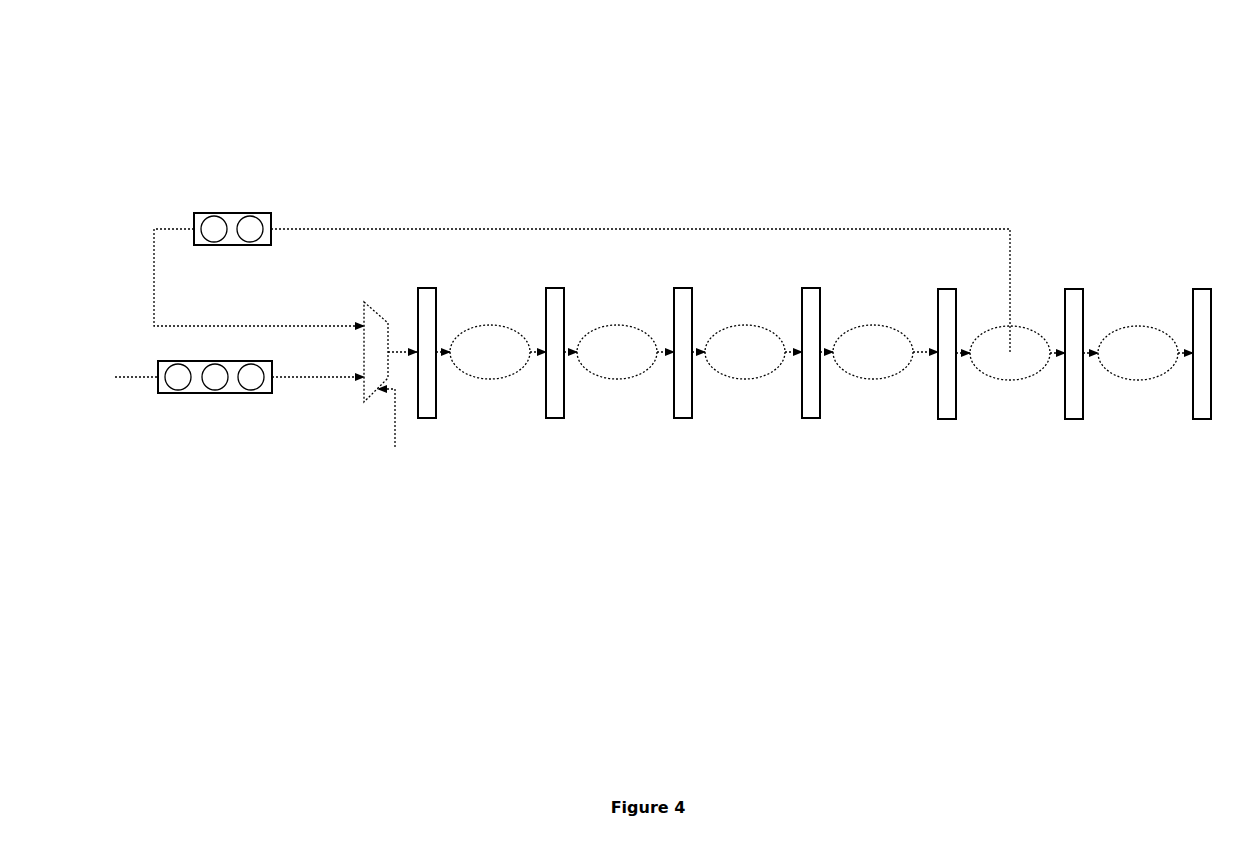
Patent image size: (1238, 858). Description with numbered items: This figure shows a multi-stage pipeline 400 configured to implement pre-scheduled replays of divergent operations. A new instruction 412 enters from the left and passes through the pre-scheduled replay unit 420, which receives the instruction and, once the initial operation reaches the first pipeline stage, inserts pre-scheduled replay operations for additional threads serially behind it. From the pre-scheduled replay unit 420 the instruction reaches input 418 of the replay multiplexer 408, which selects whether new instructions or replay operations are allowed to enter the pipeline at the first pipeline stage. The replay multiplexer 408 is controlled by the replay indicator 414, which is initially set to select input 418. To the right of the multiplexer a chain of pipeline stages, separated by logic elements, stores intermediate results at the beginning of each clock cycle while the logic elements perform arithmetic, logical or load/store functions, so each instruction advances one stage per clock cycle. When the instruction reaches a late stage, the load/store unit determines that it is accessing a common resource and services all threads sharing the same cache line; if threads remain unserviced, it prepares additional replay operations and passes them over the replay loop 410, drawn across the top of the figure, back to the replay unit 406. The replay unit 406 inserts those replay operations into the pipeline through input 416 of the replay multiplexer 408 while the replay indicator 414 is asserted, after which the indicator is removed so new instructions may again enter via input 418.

The multi-stage pipeline 400 is at (958, 70).
The replay unit 406 is at (234, 213).
The replay multiplexer 408 is at (380, 310).
The replay loop 410 is at (582, 259).
The new instruction 412 is at (194, 372).
The replay indicator 414 is at (372, 450).
The input of replay multiplexer 416 is at (330, 326).
The input of replay multiplexer 418 is at (325, 380).
The pre-scheduled replay unit 420 is at (217, 395).